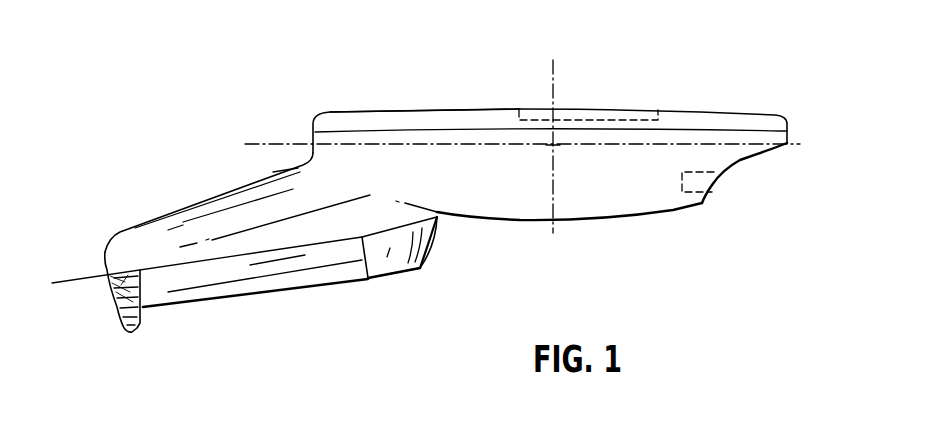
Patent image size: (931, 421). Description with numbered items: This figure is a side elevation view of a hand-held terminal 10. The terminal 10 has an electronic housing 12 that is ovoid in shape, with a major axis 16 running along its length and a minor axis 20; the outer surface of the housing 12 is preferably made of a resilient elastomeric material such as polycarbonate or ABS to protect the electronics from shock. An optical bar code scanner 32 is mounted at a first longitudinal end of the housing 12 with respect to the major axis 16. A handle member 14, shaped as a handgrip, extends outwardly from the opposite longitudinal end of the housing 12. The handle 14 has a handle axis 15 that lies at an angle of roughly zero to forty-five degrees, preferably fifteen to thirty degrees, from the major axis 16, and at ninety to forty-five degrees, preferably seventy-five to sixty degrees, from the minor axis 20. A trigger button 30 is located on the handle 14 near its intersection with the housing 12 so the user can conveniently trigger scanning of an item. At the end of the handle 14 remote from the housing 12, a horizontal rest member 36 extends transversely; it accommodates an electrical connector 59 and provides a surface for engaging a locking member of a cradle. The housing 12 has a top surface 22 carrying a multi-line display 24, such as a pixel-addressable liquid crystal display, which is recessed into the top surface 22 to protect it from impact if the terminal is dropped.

The hand-held terminal 10 is at (703, 35).
The electronic housing 12 is at (447, 63).
The handle member 14 is at (283, 289).
The handle axis 15 is at (72, 278).
The major axis 16 is at (275, 143).
The minor axis 20 is at (560, 227).
The top surface 22 is at (580, 110).
The multi-line display 24 is at (648, 118).
The trigger button 30 is at (433, 252).
The optical bar code scanner 32 is at (703, 183).
The horizontal rest member 36 is at (138, 332).
The electrical connector 59 is at (128, 295).